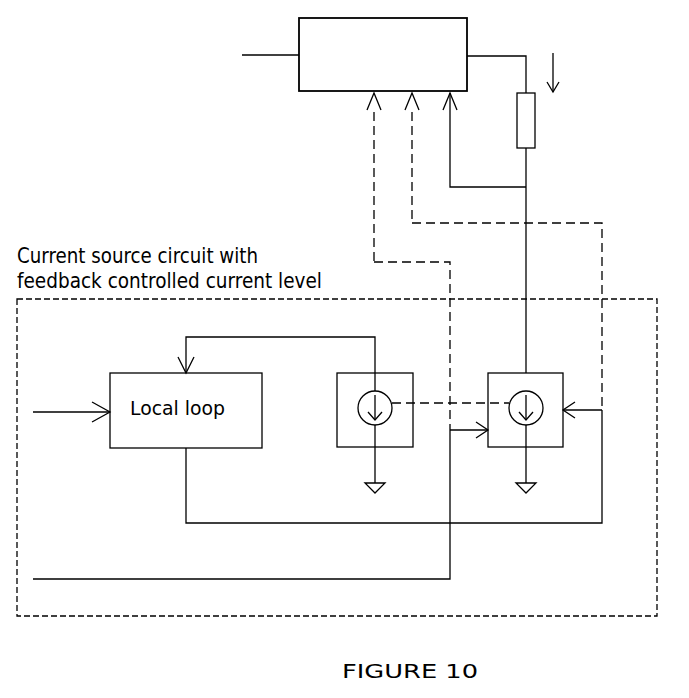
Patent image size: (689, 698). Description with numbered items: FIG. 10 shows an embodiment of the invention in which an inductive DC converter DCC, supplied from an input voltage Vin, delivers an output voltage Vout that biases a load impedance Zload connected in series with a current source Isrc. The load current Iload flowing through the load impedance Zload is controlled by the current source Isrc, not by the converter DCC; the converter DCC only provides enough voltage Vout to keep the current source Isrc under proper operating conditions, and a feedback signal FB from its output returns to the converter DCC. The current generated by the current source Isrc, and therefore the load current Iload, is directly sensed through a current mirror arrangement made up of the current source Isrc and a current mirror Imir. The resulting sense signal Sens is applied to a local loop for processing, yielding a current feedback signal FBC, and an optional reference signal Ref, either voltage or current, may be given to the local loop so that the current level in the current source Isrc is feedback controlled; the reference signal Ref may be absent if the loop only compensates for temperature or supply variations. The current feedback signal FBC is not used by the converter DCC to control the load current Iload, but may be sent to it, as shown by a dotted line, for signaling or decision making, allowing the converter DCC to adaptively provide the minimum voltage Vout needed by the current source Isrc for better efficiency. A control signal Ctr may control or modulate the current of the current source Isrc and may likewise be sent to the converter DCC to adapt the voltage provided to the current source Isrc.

The inductive DC converter DCC is at (383, 69).
The input voltage Vin is at (270, 44).
The output voltage Vout is at (496, 62).
The load current Iload is at (577, 70).
The load impedance Zload is at (557, 233).
The feedback signal FB is at (488, 140).
The current feedback signal FBC is at (394, 317).
The control signal Ctr is at (260, 346).
The reference signal Ref is at (71, 405).
The sense signal Sens is at (276, 352).
The current mirror Imir is at (423, 433).
The current source Isrc is at (535, 433).